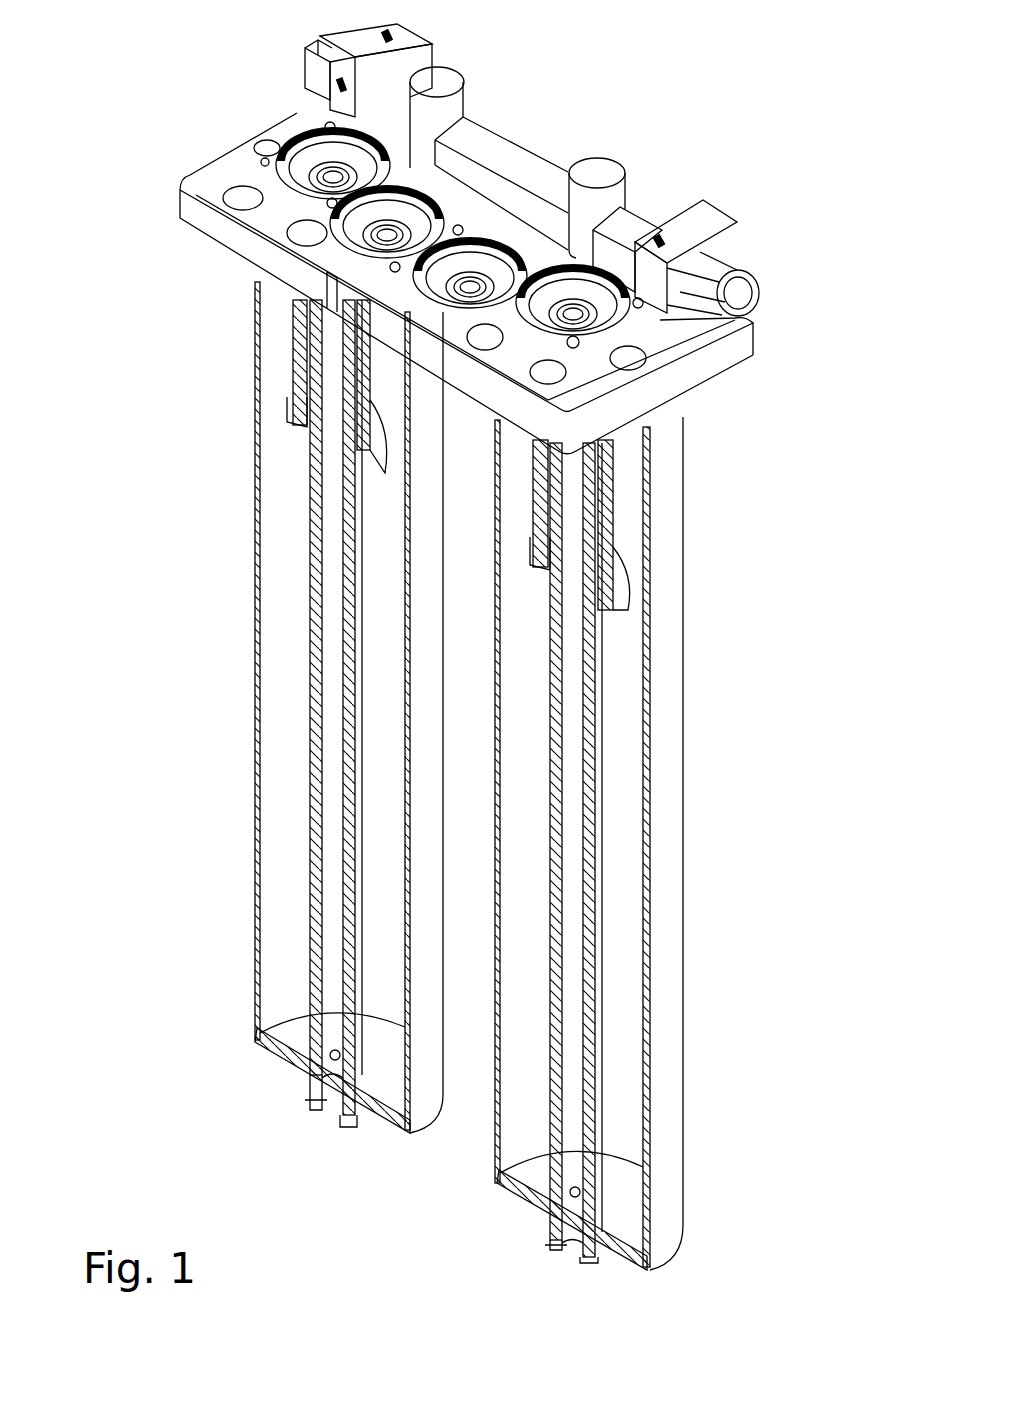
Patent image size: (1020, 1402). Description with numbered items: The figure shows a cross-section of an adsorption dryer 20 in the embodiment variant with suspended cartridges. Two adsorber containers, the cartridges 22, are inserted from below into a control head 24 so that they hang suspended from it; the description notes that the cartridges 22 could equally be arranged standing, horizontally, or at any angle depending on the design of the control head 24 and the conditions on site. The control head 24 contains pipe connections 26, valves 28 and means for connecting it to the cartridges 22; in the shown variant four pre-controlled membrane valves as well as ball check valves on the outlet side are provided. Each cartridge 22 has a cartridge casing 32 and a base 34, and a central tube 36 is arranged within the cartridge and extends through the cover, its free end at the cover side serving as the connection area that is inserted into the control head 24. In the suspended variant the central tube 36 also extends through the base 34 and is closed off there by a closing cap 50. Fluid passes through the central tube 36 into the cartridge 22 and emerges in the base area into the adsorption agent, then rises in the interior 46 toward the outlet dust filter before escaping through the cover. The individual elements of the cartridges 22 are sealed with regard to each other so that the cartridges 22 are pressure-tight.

The adsorption dryer 20 is at (620, 148).
The cartridges 22 is at (262, 1028).
The control head 24 is at (490, 153).
The pipe connections 26 is at (317, 60).
The valves 28 is at (280, 170).
The cartridge casing 32 is at (257, 813).
The base 34 is at (267, 1050).
The central tube 36 is at (330, 867).
The interior 46 is at (293, 747).
The closing cap 50 is at (557, 1247).